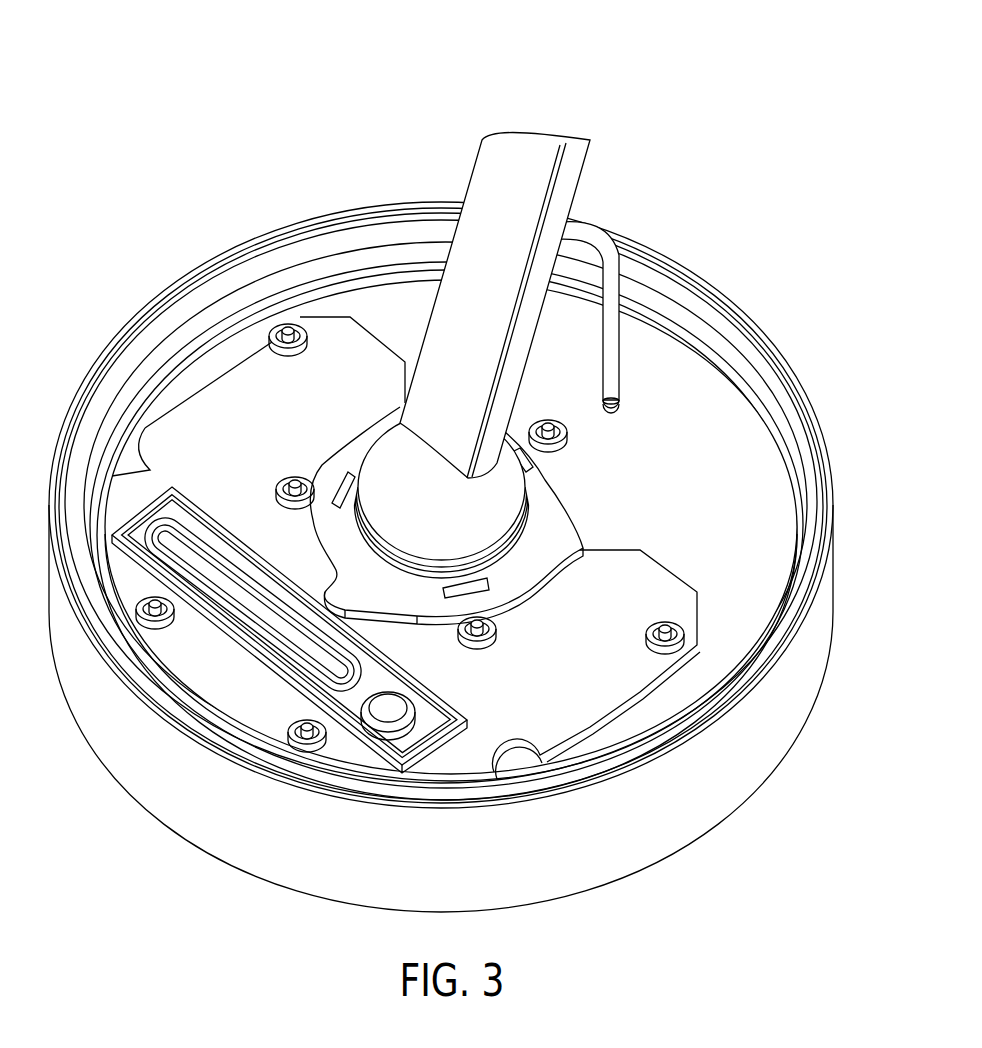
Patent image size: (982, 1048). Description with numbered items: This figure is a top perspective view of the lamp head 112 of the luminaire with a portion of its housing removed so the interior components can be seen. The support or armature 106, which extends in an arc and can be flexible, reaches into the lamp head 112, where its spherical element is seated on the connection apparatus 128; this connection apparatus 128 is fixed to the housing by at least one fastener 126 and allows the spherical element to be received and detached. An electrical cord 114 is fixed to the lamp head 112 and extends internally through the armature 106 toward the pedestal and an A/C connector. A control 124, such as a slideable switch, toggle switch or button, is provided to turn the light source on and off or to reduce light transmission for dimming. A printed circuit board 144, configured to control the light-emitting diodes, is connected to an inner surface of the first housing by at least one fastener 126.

The armature 106 is at (484, 163).
The lamp head 112 is at (822, 648).
The electrical cord 114 is at (584, 233).
The control 124 is at (323, 666).
The fastener 126 is at (286, 333).
The connection apparatus 128 is at (487, 507).
The printed circuit board 144 is at (667, 598).